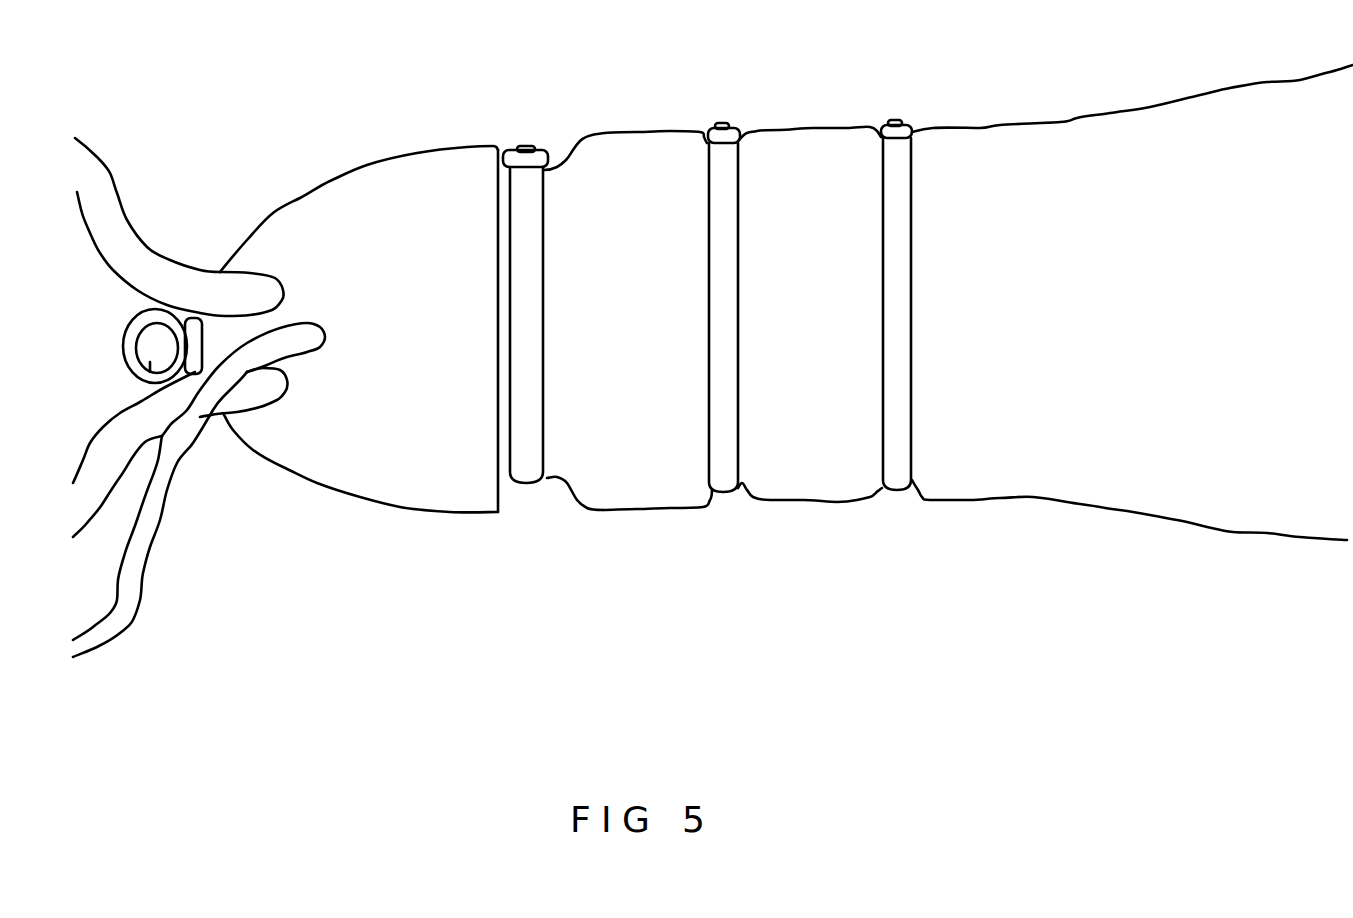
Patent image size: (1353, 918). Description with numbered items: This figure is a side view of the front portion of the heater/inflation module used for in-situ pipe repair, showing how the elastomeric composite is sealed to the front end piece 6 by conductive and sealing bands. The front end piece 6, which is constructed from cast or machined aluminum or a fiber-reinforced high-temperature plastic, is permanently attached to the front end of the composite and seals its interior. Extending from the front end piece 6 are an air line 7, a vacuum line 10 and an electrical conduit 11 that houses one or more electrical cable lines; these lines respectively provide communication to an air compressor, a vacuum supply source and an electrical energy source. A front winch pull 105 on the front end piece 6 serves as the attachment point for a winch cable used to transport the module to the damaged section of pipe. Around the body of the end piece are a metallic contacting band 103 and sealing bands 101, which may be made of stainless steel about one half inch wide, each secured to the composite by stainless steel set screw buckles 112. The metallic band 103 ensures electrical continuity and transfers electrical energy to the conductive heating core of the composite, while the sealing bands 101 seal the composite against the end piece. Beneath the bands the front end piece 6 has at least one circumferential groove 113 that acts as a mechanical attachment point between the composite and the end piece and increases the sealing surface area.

The front end piece 6 is at (390, 177).
The air line 7 is at (110, 178).
The vacuum line 10 is at (163, 493).
The electrical conduit 11 is at (113, 433).
The sealing band 101 is at (728, 477).
The metallic contacting band 103 is at (923, 322).
The front winch pull 105 is at (133, 330).
The set screw buckle 112 is at (522, 148).
The circumferential groove 113 is at (555, 485).